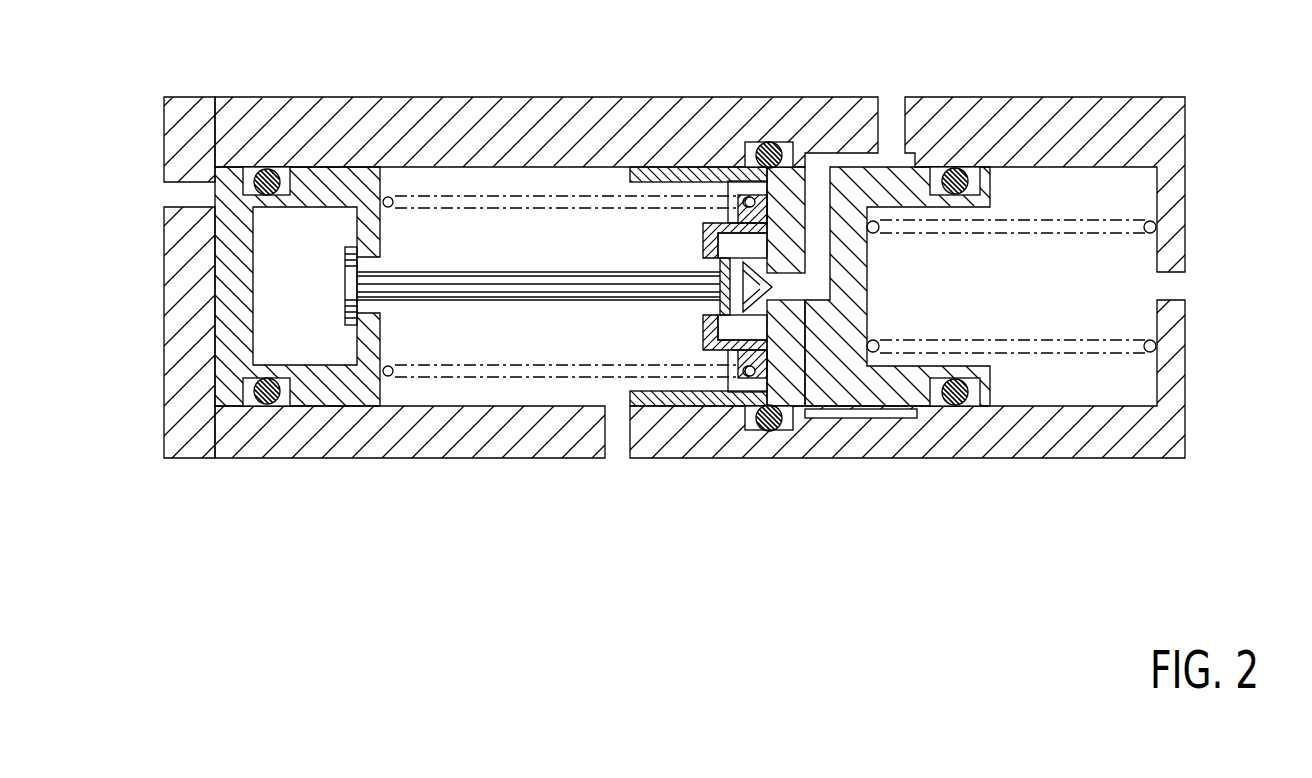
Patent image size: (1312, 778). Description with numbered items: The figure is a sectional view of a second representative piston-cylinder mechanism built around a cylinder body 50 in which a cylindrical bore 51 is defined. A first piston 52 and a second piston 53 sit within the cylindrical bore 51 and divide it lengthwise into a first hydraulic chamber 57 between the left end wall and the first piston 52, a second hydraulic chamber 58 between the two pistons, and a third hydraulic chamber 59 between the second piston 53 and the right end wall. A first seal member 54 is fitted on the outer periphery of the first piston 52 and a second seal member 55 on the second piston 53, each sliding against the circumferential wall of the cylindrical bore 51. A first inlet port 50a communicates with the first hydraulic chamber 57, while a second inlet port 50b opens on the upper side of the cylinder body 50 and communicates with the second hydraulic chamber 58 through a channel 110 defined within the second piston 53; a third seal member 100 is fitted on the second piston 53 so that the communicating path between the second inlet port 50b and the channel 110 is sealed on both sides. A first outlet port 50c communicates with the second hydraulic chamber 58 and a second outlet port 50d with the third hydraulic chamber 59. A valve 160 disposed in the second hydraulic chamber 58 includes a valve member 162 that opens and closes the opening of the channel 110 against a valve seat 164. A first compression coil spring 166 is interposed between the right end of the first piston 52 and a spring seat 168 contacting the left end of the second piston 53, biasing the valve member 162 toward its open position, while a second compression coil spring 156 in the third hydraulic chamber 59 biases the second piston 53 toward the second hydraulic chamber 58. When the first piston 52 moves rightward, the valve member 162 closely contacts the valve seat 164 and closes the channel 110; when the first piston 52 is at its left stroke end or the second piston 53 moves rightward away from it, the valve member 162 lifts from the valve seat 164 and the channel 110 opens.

The cylinder body 50 is at (671, 285).
The first inlet port 50a is at (180, 196).
The second inlet port 50b is at (890, 105).
The first outlet port 50c is at (617, 443).
The second outlet port 50d is at (1170, 283).
The cylindrical bore 51 is at (528, 406).
The first piston 52 is at (338, 190).
The second piston 53 is at (833, 375).
The first seal member 54 is at (267, 404).
The second seal member 55 is at (769, 142).
The first hydraulic chamber 57 is at (215, 303).
The second hydraulic chamber 58 is at (487, 243).
The third hydraulic chamber 59 is at (1088, 308).
The third seal member 100 is at (952, 407).
The channel 110 is at (818, 243).
The second compression coil spring 156 is at (1072, 227).
The valve 160 is at (650, 248).
The valve member 162 is at (728, 362).
The valve seat 164 is at (762, 272).
The first compression coil spring 166 is at (463, 368).
The spring seat 168 is at (705, 330).